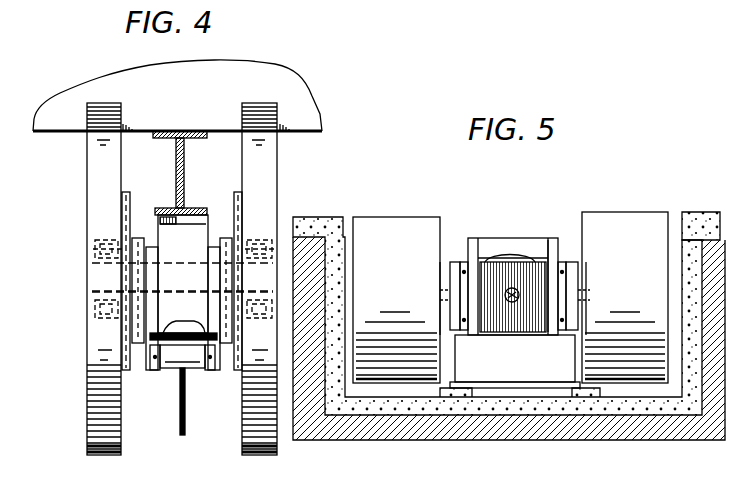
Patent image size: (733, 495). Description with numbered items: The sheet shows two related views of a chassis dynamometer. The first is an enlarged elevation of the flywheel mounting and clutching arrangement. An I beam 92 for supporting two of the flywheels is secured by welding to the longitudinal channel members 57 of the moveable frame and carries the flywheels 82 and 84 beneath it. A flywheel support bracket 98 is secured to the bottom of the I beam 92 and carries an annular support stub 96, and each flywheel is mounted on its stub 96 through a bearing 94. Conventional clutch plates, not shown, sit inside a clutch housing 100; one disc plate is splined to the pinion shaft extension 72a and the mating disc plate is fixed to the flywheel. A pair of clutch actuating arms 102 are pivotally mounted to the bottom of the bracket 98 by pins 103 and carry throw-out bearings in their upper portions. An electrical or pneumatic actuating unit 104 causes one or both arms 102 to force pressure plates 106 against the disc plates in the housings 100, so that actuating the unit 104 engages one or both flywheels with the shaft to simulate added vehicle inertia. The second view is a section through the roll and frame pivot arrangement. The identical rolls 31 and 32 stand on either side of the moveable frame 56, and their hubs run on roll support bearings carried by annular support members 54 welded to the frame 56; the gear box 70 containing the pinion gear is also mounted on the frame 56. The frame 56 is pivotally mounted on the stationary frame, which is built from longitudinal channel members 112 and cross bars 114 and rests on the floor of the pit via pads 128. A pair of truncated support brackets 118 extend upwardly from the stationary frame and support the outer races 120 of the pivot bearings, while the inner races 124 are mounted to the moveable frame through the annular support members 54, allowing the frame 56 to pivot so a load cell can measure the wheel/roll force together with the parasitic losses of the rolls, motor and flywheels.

In FIG. 4, the longitudinal channel member 57 is at (290, 88).
In FIG. 4, the flywheel 84 is at (88, 150).
In FIG. 4, the flywheel 82 is at (277, 150).
In FIG. 4, the I beam 92 is at (184, 176).
In FIG. 4, the flywheel support bracket 98 is at (208, 230).
In FIG. 4, the clutch housing 100 is at (232, 192).
In FIG. 4, the pressure plate 106 is at (232, 238).
In FIG. 4, the clutch actuating arm 102 is at (150, 247).
In FIG. 4, the bearing 94 is at (95, 248).
In FIG. 4, the pinion shaft extension 72a is at (108, 291).
In FIG. 4, the annular support stub 96 is at (120, 316).
In FIG. 4, the pin 103 is at (183, 320).
In FIG. 4, the actuating unit 104 is at (173, 372).
In FIG. 5, the roll 32 is at (378, 217).
In FIG. 5, the roll 31 is at (622, 212).
In FIG. 5, the moveable frame 56 is at (510, 236).
In FIG. 5, the gear box 70 is at (541, 255).
In FIG. 5, the inner race 124 is at (470, 300).
In FIG. 5, the truncated support bracket 118 is at (455, 262).
In FIG. 5, the outer race 120 is at (466, 262).
In FIG. 5, the annular support member 54 is at (572, 262).
In FIG. 5, the longitudinal channel member 112 is at (440, 330).
In FIG. 5, the cross bar 114 is at (515, 361).
In FIG. 5, the pad 128 is at (580, 395).